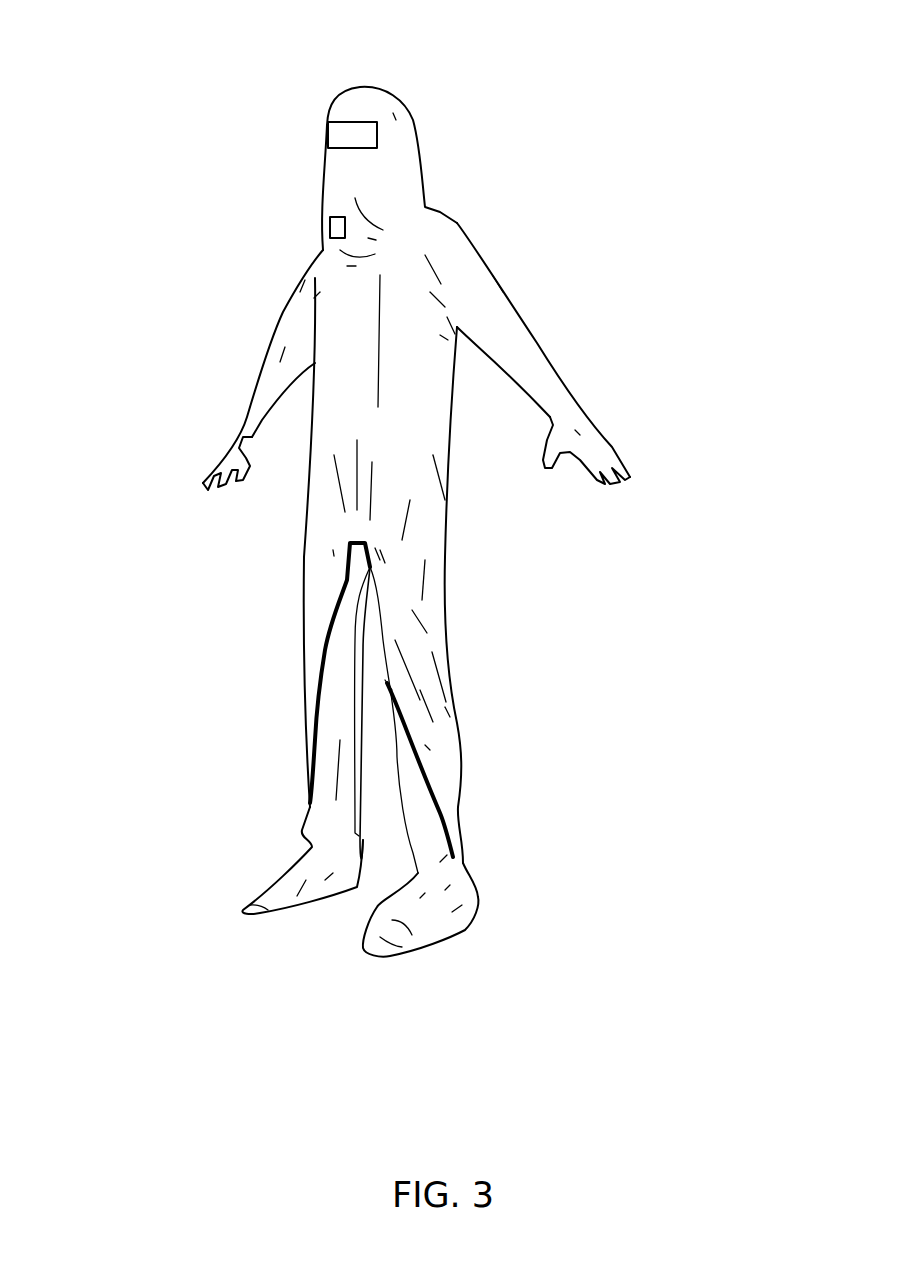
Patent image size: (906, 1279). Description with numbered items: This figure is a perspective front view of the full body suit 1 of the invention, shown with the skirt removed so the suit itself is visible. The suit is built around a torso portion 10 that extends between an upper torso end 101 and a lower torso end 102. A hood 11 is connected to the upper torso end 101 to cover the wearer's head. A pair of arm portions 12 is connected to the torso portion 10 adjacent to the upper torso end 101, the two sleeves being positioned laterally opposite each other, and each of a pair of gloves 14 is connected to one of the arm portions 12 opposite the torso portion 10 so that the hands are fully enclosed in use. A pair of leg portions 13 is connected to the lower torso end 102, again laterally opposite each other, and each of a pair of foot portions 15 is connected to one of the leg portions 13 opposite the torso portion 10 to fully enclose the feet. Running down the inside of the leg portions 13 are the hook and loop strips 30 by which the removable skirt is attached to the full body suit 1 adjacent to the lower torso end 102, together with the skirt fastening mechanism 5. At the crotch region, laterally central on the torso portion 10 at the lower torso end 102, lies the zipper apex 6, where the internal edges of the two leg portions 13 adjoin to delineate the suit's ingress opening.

The full body suit 1 is at (411, 486).
The torso portion 10 is at (330, 320).
The hood 11 is at (377, 68).
The pair of arm portions 12 is at (188, 423).
The pair of leg portions 13 is at (270, 675).
The pair of gloves 14 is at (178, 515).
The pair of foot portions 15 is at (205, 912).
The plurality of hook and loop strips 30 is at (327, 623).
The zipper apex 6 is at (355, 533).
The skirt fastening mechanism 5 is at (333, 805).
The upper torso end 101 is at (478, 192).
The lower torso end 102 is at (473, 528).